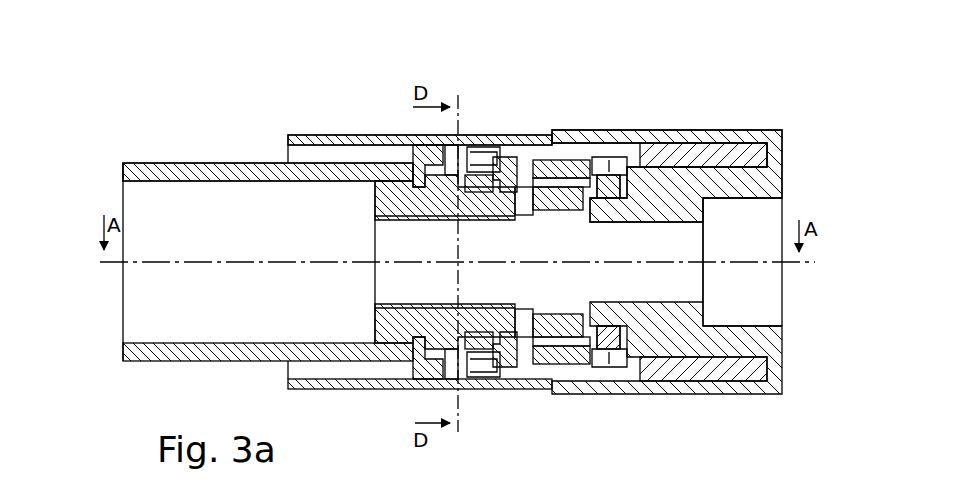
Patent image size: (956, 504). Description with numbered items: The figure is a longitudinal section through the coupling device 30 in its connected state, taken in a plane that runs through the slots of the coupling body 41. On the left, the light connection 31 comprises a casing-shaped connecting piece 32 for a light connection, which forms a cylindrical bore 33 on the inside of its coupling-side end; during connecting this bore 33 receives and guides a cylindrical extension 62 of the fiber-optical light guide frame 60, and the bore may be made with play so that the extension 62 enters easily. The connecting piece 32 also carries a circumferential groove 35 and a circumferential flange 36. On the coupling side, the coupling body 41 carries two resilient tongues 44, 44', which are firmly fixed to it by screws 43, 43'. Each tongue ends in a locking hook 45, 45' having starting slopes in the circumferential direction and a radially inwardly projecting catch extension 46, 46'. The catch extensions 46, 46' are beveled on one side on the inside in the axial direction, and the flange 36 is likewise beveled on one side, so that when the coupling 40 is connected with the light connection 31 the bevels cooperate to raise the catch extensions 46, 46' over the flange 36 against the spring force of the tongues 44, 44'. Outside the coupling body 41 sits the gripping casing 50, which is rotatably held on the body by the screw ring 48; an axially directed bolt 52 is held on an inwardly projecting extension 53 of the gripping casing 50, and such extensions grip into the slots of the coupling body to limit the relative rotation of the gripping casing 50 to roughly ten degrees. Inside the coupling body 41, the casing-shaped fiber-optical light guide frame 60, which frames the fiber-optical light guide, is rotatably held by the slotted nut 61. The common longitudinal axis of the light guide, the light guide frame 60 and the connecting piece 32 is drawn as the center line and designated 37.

The coupling device 30 is at (558, 56).
The light connection 31 is at (233, 104).
The connecting piece for a light connection 32 is at (153, 356).
The cylindrical bore 33 is at (390, 350).
The circumferential groove 35 is at (455, 365).
The circumferential flange 36 is at (608, 172).
The longitudinal axis 37 is at (790, 265).
The coupling 40 is at (671, 68).
The coupling body 41 is at (700, 155).
The screw 43 is at (609, 208).
The screw 43' is at (622, 402).
The resilient tongue 44 is at (597, 134).
The resilient tongue 44' is at (597, 381).
The locking hook 45 is at (521, 125).
The locking hook 45' is at (516, 396).
The catch extension 46 is at (519, 135).
The catch extension 46' is at (519, 385).
The screw ring 48 is at (425, 362).
The gripping casing 50 is at (750, 385).
The bolt 52 is at (478, 150).
The extension 53 is at (450, 150).
The fiber-optical light guide frame 60 is at (738, 180).
The slotted nut 61 is at (560, 322).
The cylindrical extension 62 is at (392, 214).